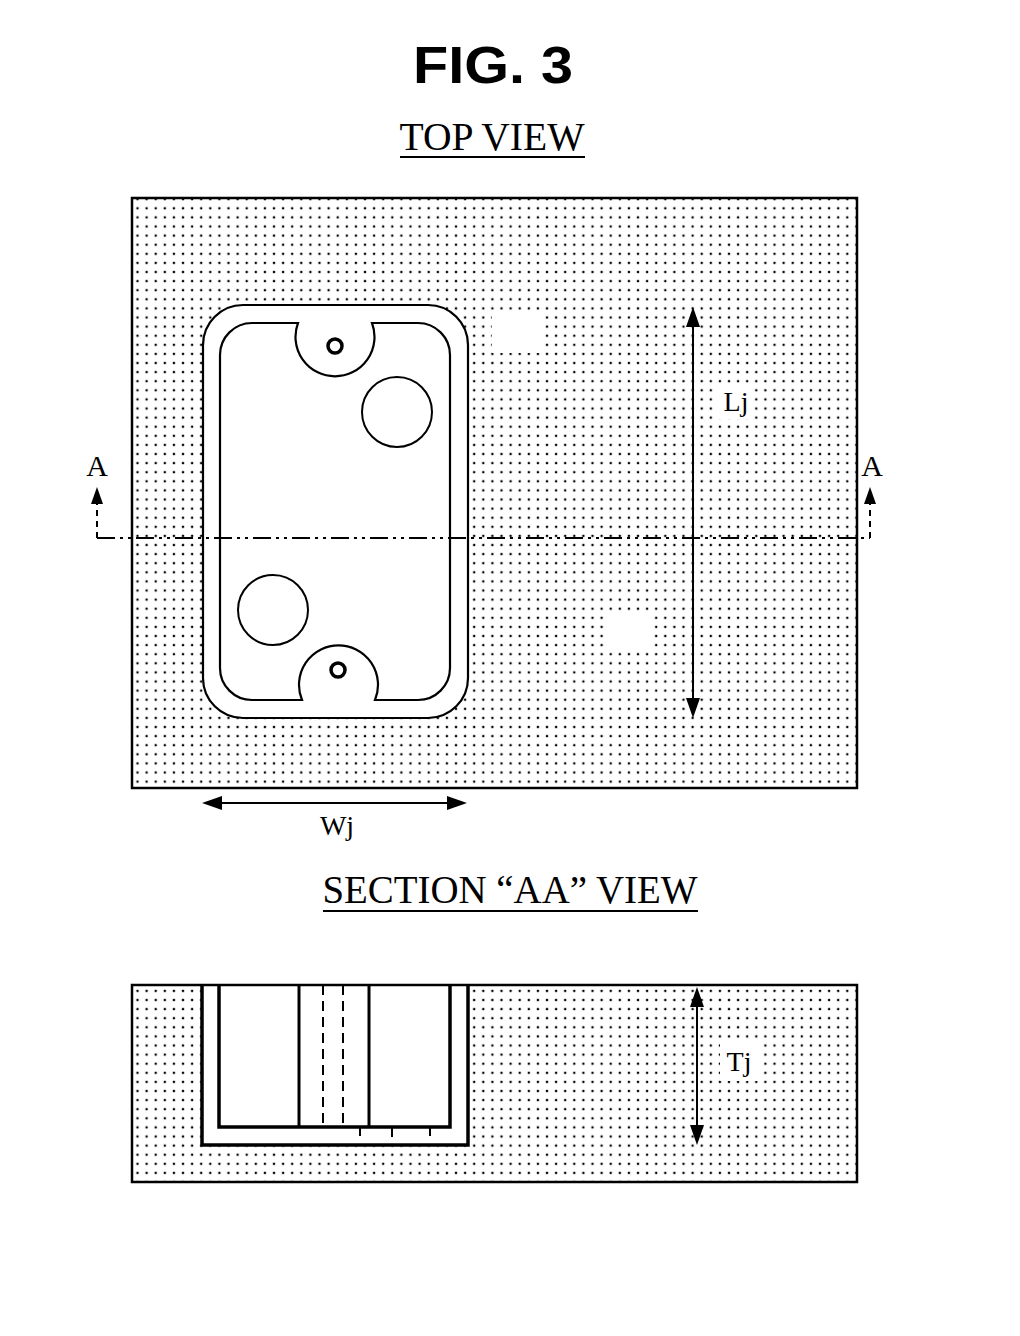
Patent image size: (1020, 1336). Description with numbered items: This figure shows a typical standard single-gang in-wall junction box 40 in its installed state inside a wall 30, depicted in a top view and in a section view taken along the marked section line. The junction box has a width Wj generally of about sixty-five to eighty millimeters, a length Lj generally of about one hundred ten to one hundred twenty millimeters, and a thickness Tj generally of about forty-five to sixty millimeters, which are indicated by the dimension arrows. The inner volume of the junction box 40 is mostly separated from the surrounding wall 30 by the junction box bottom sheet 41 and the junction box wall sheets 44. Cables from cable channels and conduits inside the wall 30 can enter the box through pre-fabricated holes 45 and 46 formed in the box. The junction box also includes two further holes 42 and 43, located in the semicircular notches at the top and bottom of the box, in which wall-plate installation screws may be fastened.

The wall 30 is at (695, 182).
The single-gang in-wall junction box 40 is at (192, 296).
The junction box bottom sheet 41 is at (272, 460).
The hole 42 is at (323, 337).
The hole 43 is at (347, 664).
The junction box wall sheets 44 is at (458, 607).
The hole 45 is at (410, 377).
The hole 46 is at (247, 583).